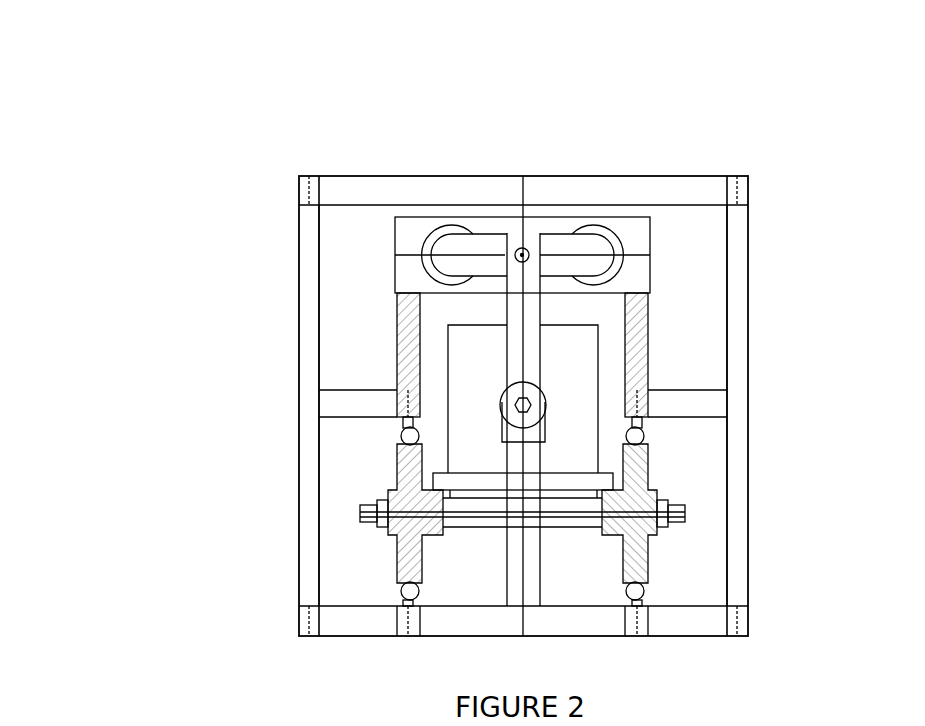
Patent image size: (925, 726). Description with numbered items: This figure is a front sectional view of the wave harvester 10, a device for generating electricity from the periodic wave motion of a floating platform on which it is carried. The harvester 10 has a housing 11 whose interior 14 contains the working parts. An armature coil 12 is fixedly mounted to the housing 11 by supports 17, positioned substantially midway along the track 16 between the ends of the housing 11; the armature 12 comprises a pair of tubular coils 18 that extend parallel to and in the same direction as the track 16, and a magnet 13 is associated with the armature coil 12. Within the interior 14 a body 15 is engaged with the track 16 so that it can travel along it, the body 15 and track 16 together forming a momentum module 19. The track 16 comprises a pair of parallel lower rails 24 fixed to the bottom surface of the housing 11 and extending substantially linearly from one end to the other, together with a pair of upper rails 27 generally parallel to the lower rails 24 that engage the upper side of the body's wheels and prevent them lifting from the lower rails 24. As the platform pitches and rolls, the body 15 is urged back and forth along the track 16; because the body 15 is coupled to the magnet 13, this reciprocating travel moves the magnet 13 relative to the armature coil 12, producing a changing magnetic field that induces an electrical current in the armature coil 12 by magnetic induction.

The harvester 10 is at (767, 163).
The housing 11 is at (742, 487).
The armature coil 12 is at (335, 110).
The magnet 13 is at (578, 248).
The interior 14 is at (693, 330).
The body 15 is at (467, 449).
The track 16 is at (400, 588).
The supports 17 is at (505, 307).
The tubular coils 18 is at (441, 228).
The momentum module 19 is at (115, 452).
The lower rails 24 is at (647, 597).
The upper rails 27 is at (640, 432).